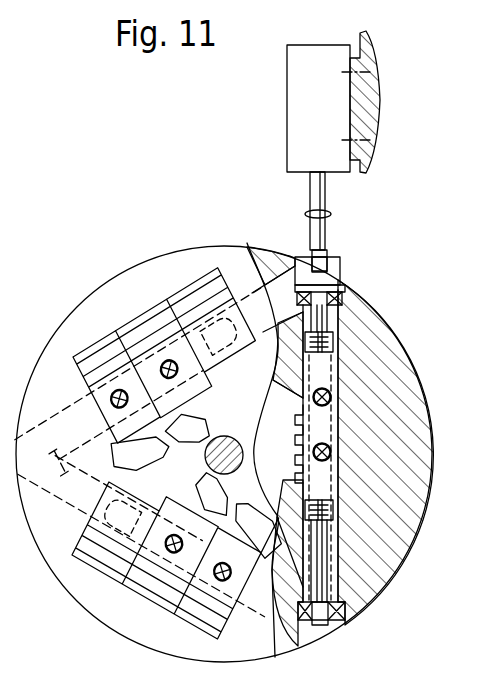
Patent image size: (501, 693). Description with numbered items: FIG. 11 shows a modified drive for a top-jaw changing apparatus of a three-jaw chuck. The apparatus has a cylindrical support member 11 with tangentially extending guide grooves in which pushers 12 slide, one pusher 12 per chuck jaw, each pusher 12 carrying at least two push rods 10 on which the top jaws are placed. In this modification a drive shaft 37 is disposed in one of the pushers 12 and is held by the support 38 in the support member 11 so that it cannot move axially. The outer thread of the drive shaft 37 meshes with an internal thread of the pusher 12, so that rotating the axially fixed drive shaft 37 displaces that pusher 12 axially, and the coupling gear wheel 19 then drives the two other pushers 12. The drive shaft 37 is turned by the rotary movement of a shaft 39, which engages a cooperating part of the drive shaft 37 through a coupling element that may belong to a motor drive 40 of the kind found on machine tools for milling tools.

The push rods 10 is at (331, 452).
The cylindrical support member 11 is at (403, 389).
The pusher 12 is at (335, 368).
The coupling gear wheel 19 is at (335, 510).
The drive shaft 37 is at (330, 337).
The support 38 is at (340, 290).
The shaft 39 is at (318, 194).
The motor drive 40 is at (305, 123).